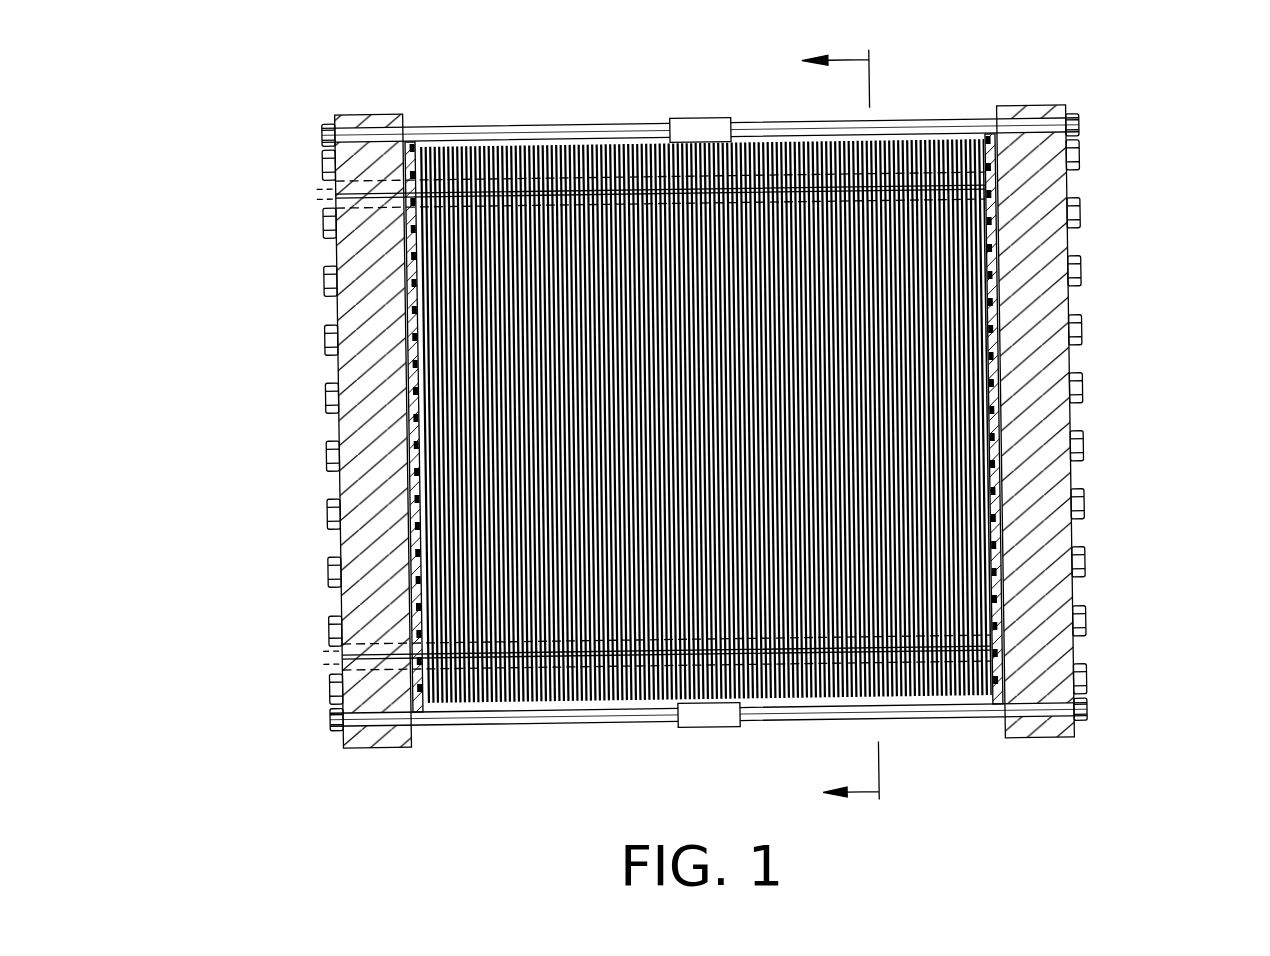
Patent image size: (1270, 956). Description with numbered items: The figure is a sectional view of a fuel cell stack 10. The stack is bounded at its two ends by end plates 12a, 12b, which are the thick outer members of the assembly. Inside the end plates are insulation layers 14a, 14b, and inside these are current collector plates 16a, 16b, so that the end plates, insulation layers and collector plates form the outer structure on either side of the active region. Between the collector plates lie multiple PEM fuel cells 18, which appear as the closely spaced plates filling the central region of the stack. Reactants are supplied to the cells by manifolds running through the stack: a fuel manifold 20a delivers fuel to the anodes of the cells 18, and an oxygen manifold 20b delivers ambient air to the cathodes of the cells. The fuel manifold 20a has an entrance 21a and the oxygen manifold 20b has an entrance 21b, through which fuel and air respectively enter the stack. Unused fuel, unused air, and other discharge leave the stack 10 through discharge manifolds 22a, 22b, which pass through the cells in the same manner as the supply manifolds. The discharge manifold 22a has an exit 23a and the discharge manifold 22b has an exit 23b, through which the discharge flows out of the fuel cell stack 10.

The fuel cell stack 10 is at (735, 430).
The end plate 12a is at (368, 743).
The end plate 12b is at (1033, 736).
The insulation layer 14a is at (418, 722).
The insulation layer 14b is at (1001, 722).
The current collector plate 16a is at (414, 158).
The current collector plate 16b is at (990, 140).
The PEM fuel cells 18 is at (577, 699).
The fuel manifold 20a is at (623, 658).
The oxygen manifold 20b is at (657, 645).
The entrance 21a is at (338, 665).
The entrance 21b is at (338, 653).
The discharge manifold 22a is at (541, 183).
The discharge manifold 22b is at (622, 192).
The exit 23a is at (338, 192).
The exit 23b is at (338, 203).